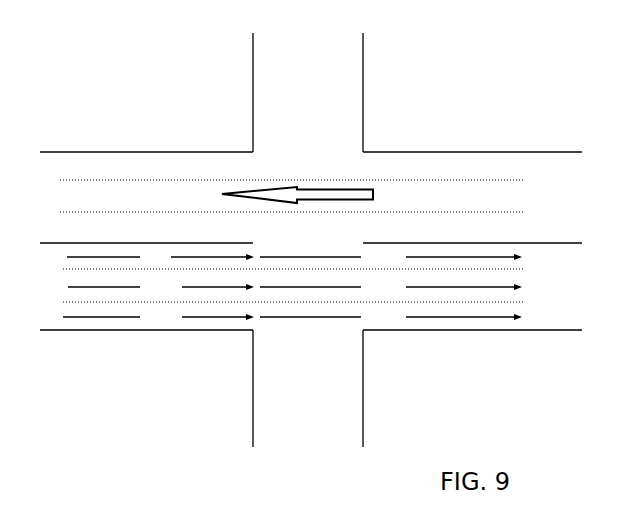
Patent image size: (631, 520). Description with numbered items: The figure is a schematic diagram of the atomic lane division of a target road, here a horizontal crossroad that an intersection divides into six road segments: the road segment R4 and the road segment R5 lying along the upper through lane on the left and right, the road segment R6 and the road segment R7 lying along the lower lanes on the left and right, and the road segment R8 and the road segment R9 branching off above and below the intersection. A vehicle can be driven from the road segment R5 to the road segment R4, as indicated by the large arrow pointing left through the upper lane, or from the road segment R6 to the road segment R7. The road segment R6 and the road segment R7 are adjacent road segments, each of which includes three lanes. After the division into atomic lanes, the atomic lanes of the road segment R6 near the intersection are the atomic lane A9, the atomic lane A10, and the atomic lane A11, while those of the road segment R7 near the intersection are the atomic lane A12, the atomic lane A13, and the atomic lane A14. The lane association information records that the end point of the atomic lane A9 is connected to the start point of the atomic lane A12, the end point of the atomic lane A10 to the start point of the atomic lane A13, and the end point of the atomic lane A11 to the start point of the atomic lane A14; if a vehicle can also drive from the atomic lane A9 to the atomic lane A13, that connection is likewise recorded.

The road segment R4 is at (170, 182).
The road segment R5 is at (441, 182).
The road segment R6 is at (170, 286).
The road segment R7 is at (441, 286).
The road segment R8 is at (308, 92).
The road segment R9 is at (308, 388).
The atomic lane A9 is at (160, 257).
The atomic lane A10 is at (161, 287).
The atomic lane A11 is at (158, 317).
The atomic lane A12 is at (391, 257).
The atomic lane A13 is at (391, 287).
The atomic lane A14 is at (391, 317).